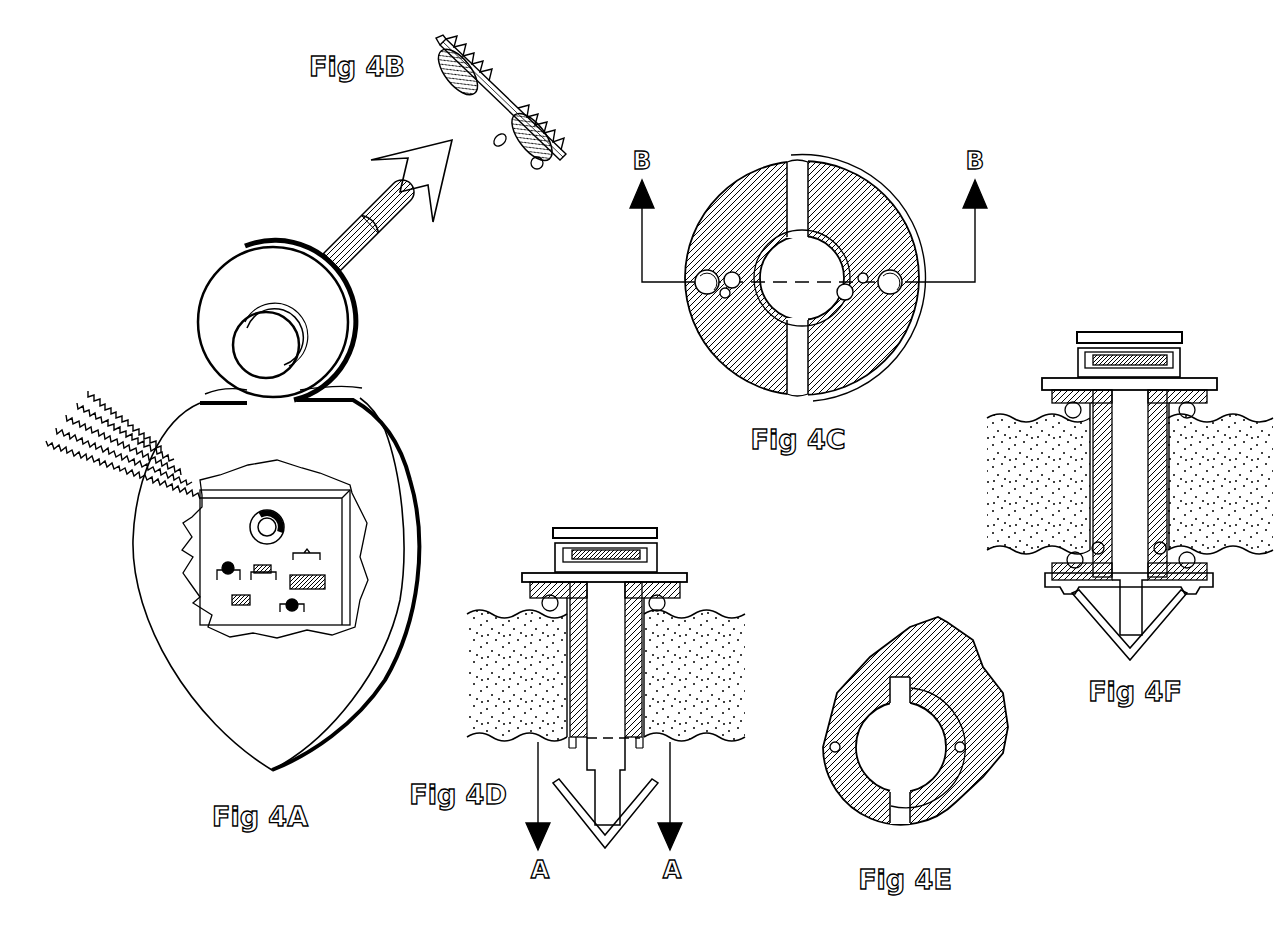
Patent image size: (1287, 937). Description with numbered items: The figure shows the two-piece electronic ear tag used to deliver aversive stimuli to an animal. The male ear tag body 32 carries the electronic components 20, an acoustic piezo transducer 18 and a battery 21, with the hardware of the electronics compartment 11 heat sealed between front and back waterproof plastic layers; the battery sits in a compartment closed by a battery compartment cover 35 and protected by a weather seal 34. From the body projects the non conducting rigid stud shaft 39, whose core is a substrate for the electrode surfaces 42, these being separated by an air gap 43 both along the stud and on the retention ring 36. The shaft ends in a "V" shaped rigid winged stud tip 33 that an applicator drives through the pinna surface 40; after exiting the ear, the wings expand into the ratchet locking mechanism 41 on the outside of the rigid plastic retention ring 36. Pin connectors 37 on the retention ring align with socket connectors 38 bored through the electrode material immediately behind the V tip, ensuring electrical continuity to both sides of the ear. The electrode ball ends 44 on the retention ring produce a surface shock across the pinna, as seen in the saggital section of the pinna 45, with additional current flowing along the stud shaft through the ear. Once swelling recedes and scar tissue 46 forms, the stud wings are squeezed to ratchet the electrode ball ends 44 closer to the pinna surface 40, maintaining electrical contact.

In FIG. 4A, the electronics compartment 11 is at (297, 480).
In FIG. 4A, the acoustic piezo transducer 18 is at (288, 515).
In FIG. 4A, the electronic components 20 is at (318, 530).
In FIG. 4D, the battery 21 is at (583, 553).
In FIG. 4A, the male ear tag body 32 is at (248, 290).
In FIG. 4A, the "V" shaped rigid winged stud tip 33 is at (422, 155).
In FIG. 4D, the "V" shaped rigid winged stud tip 33 is at (608, 833).
In FIG. 4D, the weather seal 34 is at (658, 542).
In FIG. 4A, the battery compartment cover 35 is at (240, 352).
In FIG. 4D, the battery compartment cover 35 is at (630, 532).
In FIG. 4B, the retention ring 36 is at (488, 113).
In FIG. 4C, the retention ring 36 is at (892, 203).
In FIG. 4B, the pin connectors 37 is at (500, 143).
In FIG. 4C, the pin connectors 37 is at (718, 307).
In FIG. 4D, the socket connectors 38 is at (640, 740).
In FIG. 4E, the socket connectors 38 is at (963, 753).
In FIG. 4D, the non conducting rigid stud shaft 39 is at (622, 757).
In FIG. 4E, the non conducting rigid stud shaft 39 is at (918, 740).
In FIG. 4D, the pinna surface 40 is at (636, 658).
In FIG. 4F, the pinna surface 40 is at (1137, 442).
In FIG. 4B, the ratchet locking mechanism 41 is at (502, 125).
In FIG. 4A, the electrode surfaces 42 is at (337, 233).
In FIG. 4B, the electrode surfaces 42 is at (515, 135).
In FIG. 4C, the electrode surfaces 42 is at (738, 202).
In FIG. 4E, the electrode surfaces 42 is at (915, 737).
In FIG. 4A, the air gap 43 is at (372, 230).
In FIG. 4C, the air gap 43 is at (795, 198).
In FIG. 4E, the air gap 43 is at (913, 643).
In FIG. 4B, the electrode ball ends 44 is at (537, 168).
In FIG. 4C, the electrode ball ends 44 is at (697, 293).
In FIG. 4D, the saggital section of the pinna 45 is at (733, 670).
In FIG. 4F, the saggital section of the pinna 45 is at (1237, 443).
In FIG. 4D, the scar tissue 46 is at (645, 633).